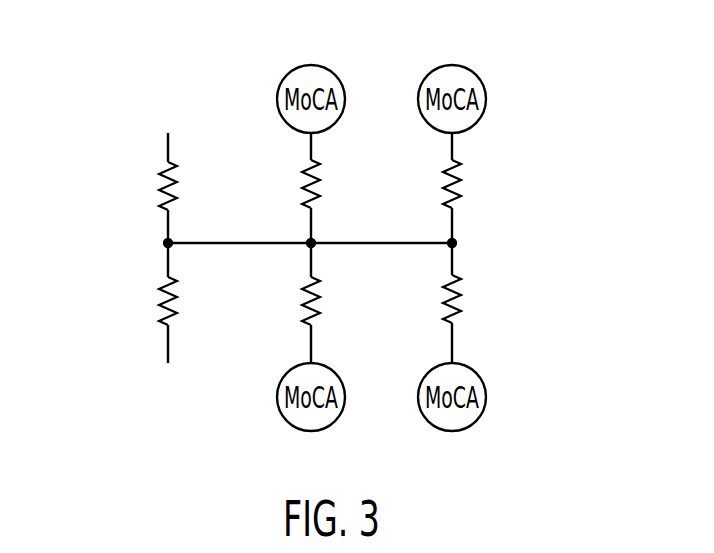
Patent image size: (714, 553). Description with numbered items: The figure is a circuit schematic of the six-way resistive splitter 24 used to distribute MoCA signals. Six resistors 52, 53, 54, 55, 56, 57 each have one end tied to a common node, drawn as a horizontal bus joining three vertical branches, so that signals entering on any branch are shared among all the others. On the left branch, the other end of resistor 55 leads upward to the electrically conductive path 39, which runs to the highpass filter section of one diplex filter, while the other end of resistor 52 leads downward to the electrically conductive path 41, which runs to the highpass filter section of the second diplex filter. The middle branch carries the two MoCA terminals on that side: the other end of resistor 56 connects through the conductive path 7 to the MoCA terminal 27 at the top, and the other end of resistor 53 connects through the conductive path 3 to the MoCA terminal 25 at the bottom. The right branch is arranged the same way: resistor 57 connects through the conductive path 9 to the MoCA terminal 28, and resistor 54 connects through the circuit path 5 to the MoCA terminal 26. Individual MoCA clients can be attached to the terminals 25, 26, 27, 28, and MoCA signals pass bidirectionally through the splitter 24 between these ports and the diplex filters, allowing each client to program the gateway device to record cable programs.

The 6-way resistive splitter 24 is at (548, 70).
The MoCA terminal 25 is at (278, 405).
The MoCA terminal 26 is at (487, 400).
The MoCA terminal 27 is at (308, 65).
The MoCA terminal 28 is at (445, 66).
The electrically conductive path 3 is at (312, 345).
The electrically conductive circuit path 5 is at (454, 350).
The electrically conductive path 7 is at (312, 148).
The electrically conductive path 9 is at (453, 150).
The electrically conductive path 39 is at (168, 142).
The electrically conductive path 41 is at (166, 350).
The resistor 52 is at (160, 300).
The resistor 53 is at (303, 293).
The resistor 54 is at (456, 298).
The resistor 55 is at (160, 192).
The resistor 56 is at (303, 190).
The resistor 57 is at (456, 200).